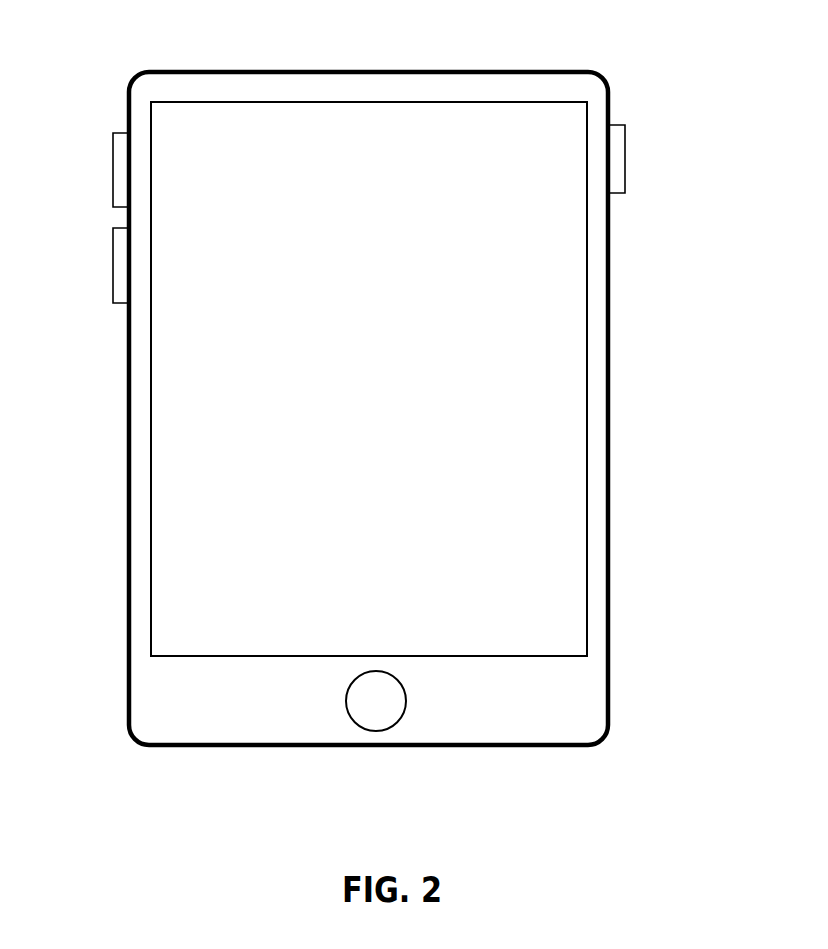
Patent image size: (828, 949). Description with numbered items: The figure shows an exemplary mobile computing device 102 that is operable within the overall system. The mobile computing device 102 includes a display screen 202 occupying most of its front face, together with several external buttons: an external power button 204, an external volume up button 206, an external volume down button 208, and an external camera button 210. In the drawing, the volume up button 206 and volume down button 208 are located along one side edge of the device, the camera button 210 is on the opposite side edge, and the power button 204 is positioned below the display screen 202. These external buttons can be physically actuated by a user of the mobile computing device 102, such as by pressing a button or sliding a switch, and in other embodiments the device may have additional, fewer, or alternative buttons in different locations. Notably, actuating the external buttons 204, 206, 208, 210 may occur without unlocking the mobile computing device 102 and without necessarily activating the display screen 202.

The mobile computing device 102 is at (445, 70).
The display screen 202 is at (588, 289).
The external power button 204 is at (378, 720).
The external volume up button 206 is at (113, 157).
The external volume down button 208 is at (113, 255).
The external camera button 210 is at (625, 157).